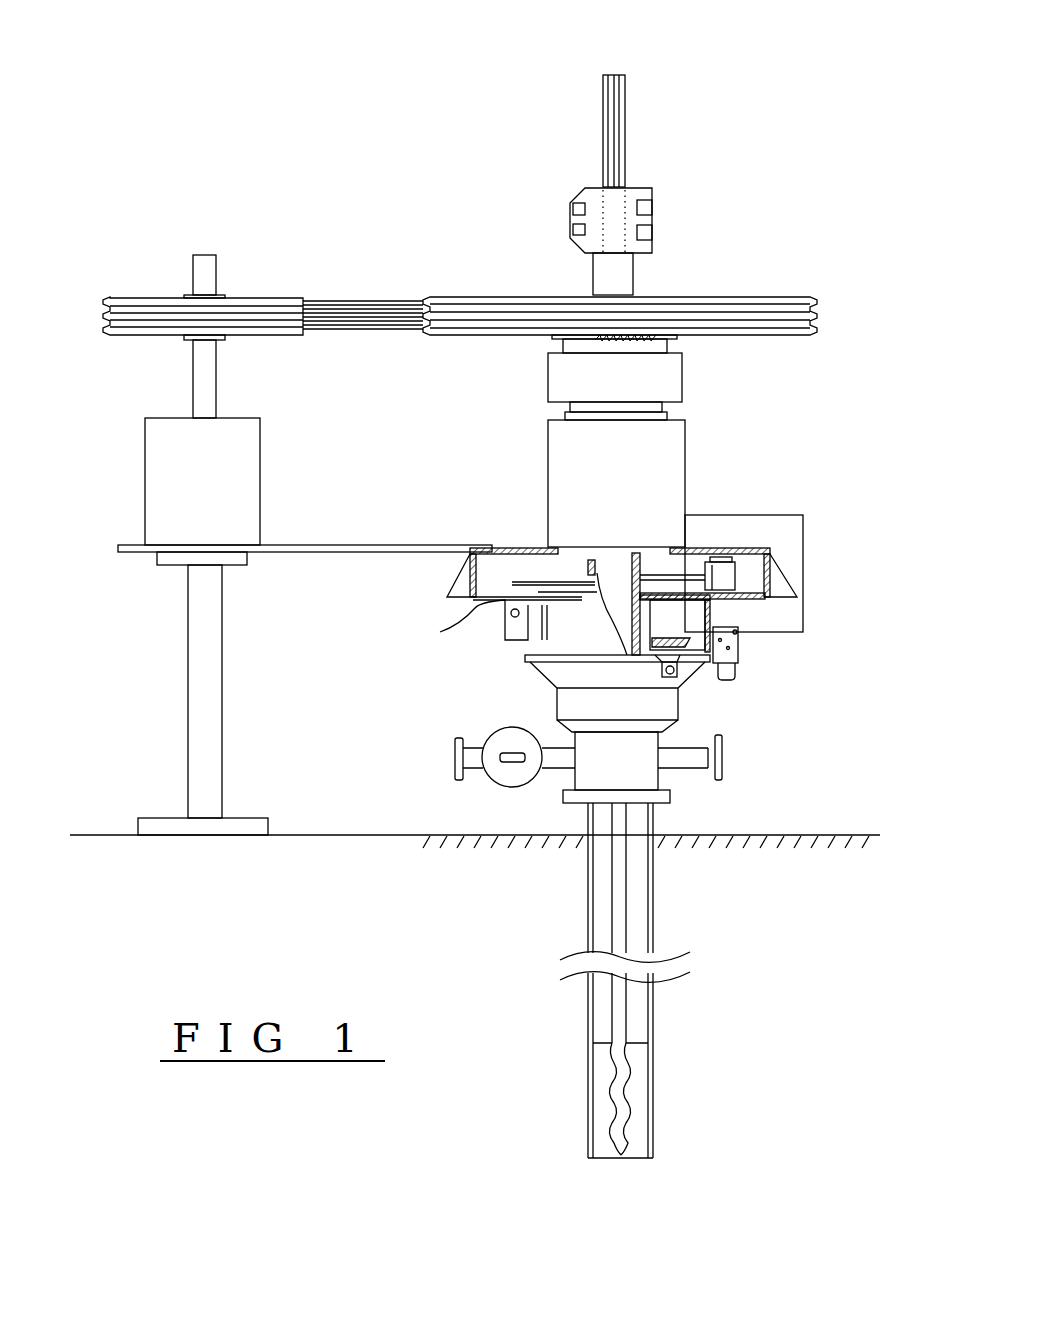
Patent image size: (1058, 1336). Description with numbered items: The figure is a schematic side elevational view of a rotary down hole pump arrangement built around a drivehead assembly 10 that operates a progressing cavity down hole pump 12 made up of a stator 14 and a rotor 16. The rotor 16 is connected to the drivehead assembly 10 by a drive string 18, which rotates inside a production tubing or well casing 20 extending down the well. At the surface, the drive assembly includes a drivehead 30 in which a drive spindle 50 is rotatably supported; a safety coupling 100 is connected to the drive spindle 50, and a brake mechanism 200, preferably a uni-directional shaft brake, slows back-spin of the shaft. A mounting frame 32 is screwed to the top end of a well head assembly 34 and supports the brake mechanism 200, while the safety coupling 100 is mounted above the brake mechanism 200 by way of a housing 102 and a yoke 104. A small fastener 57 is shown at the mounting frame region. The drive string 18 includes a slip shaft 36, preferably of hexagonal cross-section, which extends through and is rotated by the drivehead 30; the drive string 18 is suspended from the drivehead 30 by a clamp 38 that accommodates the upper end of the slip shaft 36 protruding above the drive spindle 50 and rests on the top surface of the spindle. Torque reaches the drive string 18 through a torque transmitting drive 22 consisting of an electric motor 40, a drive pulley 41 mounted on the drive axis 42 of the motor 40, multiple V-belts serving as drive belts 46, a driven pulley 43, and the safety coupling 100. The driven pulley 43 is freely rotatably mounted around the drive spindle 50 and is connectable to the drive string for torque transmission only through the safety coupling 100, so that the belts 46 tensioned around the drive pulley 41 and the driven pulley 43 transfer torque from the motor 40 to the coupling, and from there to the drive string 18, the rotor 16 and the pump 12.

The drivehead assembly 10 is at (402, 591).
The progressing cavity down hole pump 12 is at (655, 1053).
The stator 14 is at (643, 1113).
The rotor 16 is at (625, 1073).
The drive string 18 is at (617, 919).
The production tubing or well casing 20 is at (653, 873).
The torque transmitting drive 22 is at (178, 347).
The drivehead 30 is at (743, 658).
The mounting frame 32 is at (590, 678).
The well head assembly 34 is at (652, 770).
The slip shaft 36 is at (618, 78).
The clamp 38 is at (645, 192).
The electric motor 40 is at (180, 497).
The drive pulley 41 is at (125, 298).
The drive axis 42 is at (205, 392).
The driven pulley 43 is at (678, 297).
The drive belts 46 is at (395, 307).
The drive spindle 50 is at (479, 619).
The mounting bolt 57 is at (678, 668).
The safety coupling 100 is at (630, 470).
The housing 102 is at (688, 417).
The yoke 104 is at (770, 548).
The brake mechanism 200 is at (740, 577).